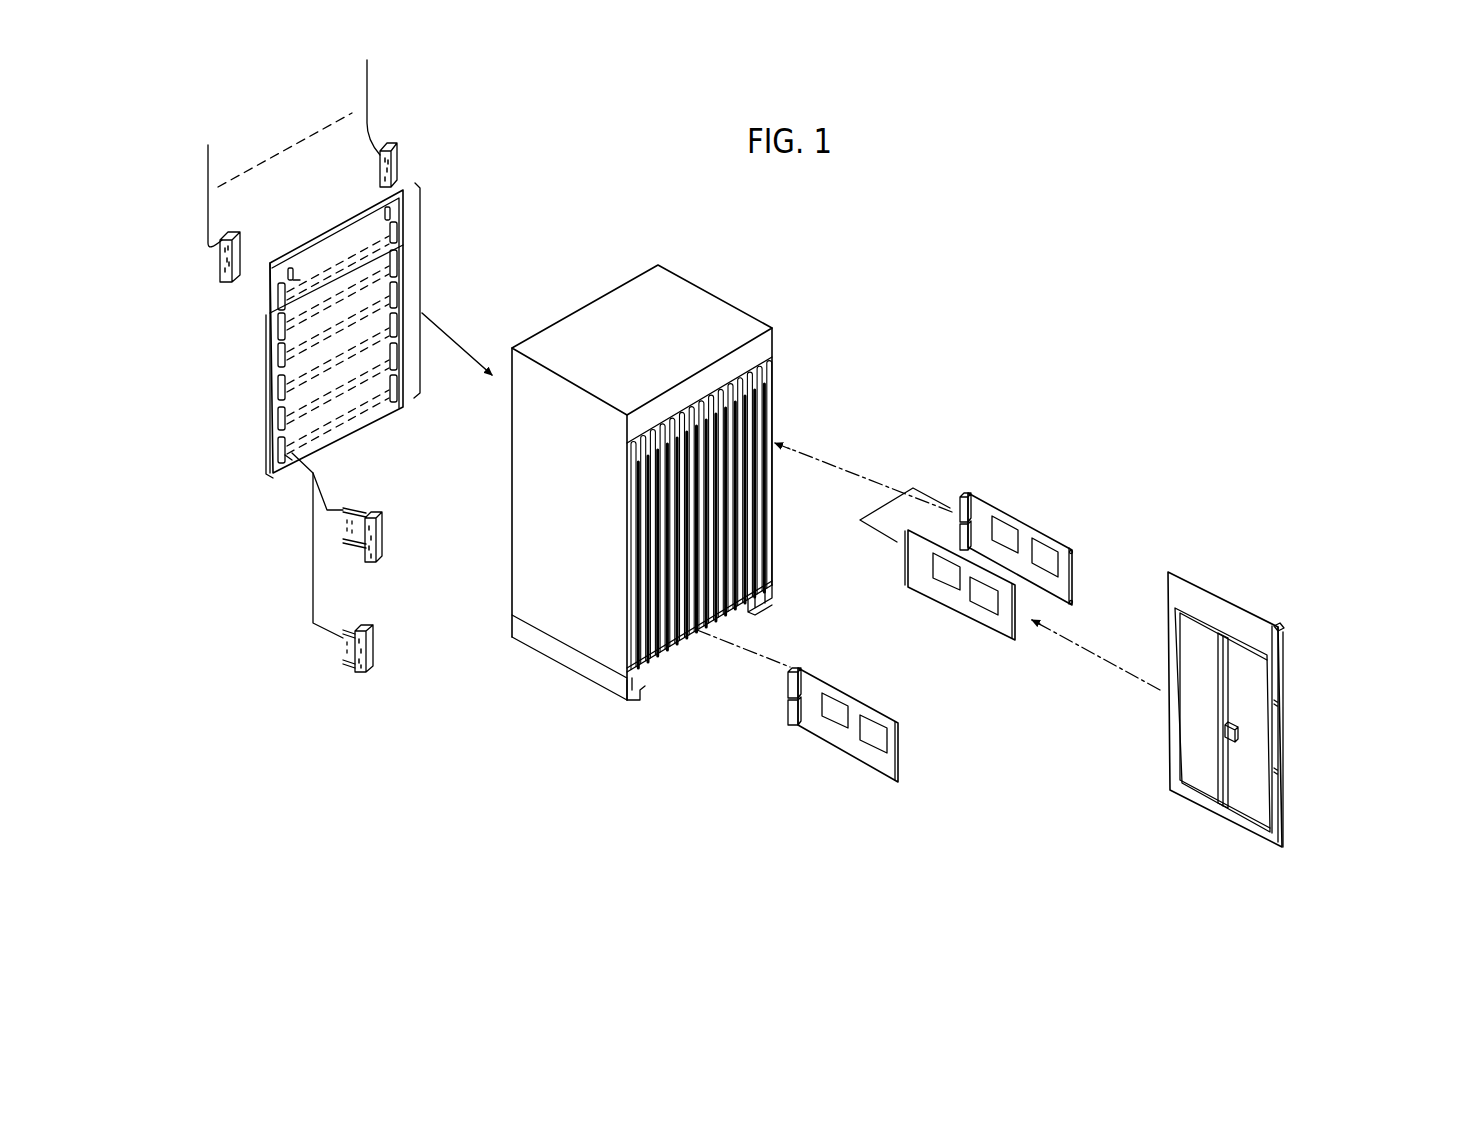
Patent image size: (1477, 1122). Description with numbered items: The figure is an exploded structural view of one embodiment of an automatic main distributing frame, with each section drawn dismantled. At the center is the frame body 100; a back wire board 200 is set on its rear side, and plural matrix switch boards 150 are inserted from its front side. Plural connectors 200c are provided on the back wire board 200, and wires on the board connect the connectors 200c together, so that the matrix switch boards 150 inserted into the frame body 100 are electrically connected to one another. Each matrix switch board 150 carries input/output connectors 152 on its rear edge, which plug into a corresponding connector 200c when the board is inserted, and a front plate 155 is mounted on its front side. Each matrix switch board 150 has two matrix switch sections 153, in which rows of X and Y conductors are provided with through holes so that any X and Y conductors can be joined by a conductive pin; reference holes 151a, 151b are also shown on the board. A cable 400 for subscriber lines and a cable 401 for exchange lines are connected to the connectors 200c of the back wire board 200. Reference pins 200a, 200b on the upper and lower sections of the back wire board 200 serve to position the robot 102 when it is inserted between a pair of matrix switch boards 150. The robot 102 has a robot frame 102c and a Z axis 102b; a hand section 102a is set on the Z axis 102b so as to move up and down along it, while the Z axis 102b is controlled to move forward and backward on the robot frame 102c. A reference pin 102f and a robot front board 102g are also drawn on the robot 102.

The cable 400 is at (204, 190).
The cable 401 is at (372, 118).
The back wire board 200 is at (422, 287).
The reference pin 200a is at (279, 479).
The reference pin 200b is at (400, 221).
The connector 200c is at (372, 514).
The frame body 100 is at (587, 681).
The matrix switch board 150 is at (1028, 516).
The matrix switch section 153 is at (998, 511).
The reference hole 151a is at (1073, 604).
The reference hole 151b is at (1074, 548).
The input/output connector 152 is at (795, 665).
The front plate 155 is at (1077, 613).
The robot 102 is at (1232, 595).
The hand section 102a is at (1242, 734).
The Z axis 102b is at (1231, 682).
The robot frame 102c is at (1191, 805).
The reference pin 102f is at (1283, 630).
The robot front board 102g is at (1281, 856).